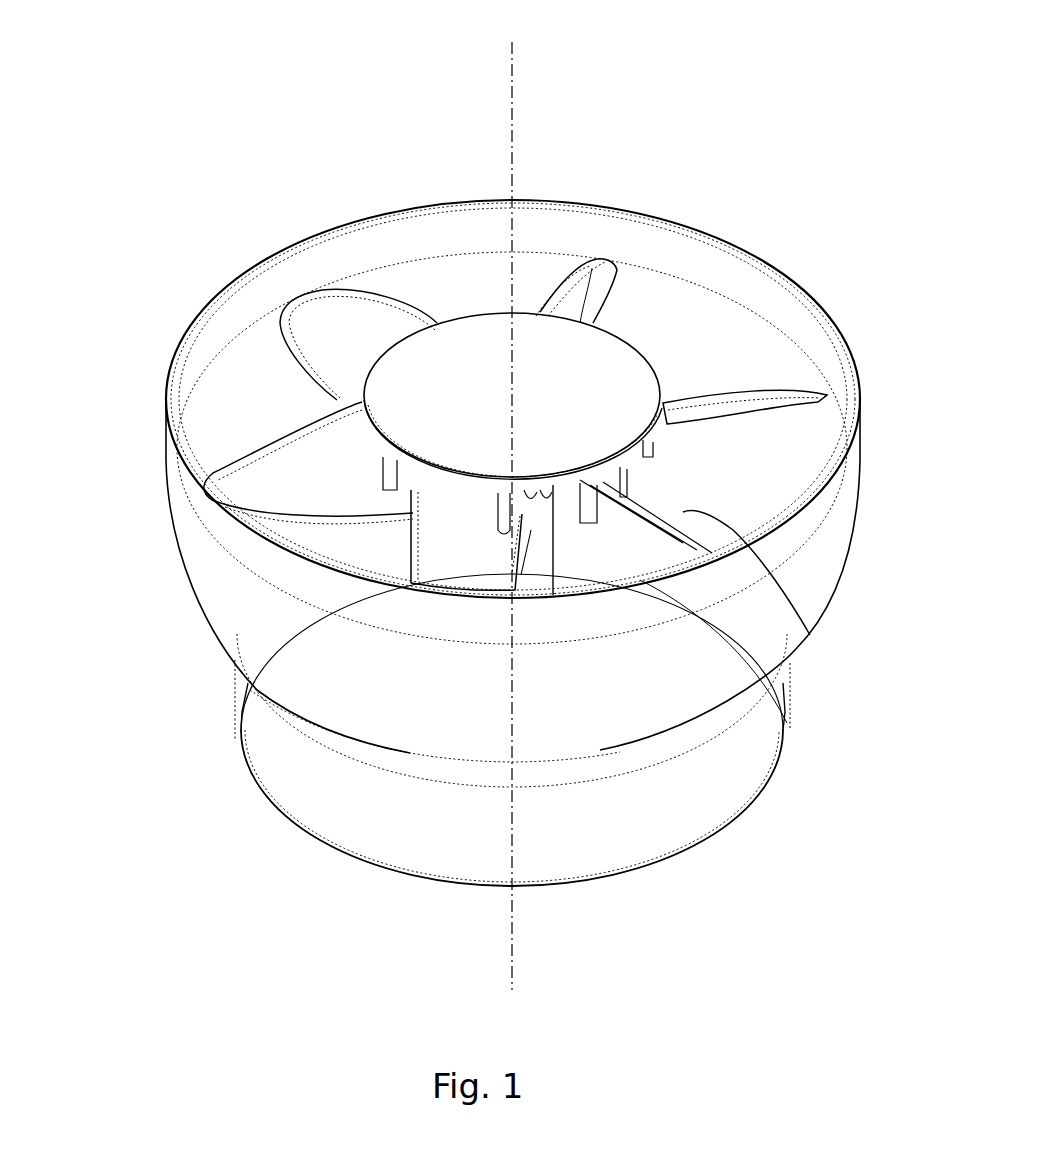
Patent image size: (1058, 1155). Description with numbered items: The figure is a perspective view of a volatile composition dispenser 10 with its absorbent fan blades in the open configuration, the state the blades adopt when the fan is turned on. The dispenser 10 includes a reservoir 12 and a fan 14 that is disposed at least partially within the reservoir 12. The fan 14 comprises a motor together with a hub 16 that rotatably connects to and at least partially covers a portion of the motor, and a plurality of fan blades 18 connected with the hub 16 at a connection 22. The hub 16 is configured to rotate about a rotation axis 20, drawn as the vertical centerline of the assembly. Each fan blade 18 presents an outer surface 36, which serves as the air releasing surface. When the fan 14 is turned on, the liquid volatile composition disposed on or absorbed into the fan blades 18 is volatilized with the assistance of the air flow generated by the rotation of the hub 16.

The volatile composition dispenser 10 is at (250, 182).
The reservoir 12 is at (592, 222).
The fan 14 is at (461, 306).
The hub 16 is at (547, 436).
The fan blades 18 is at (582, 297).
The rotation axis 20 is at (515, 502).
The connection 22 is at (472, 489).
The outer surface 36 is at (346, 479).